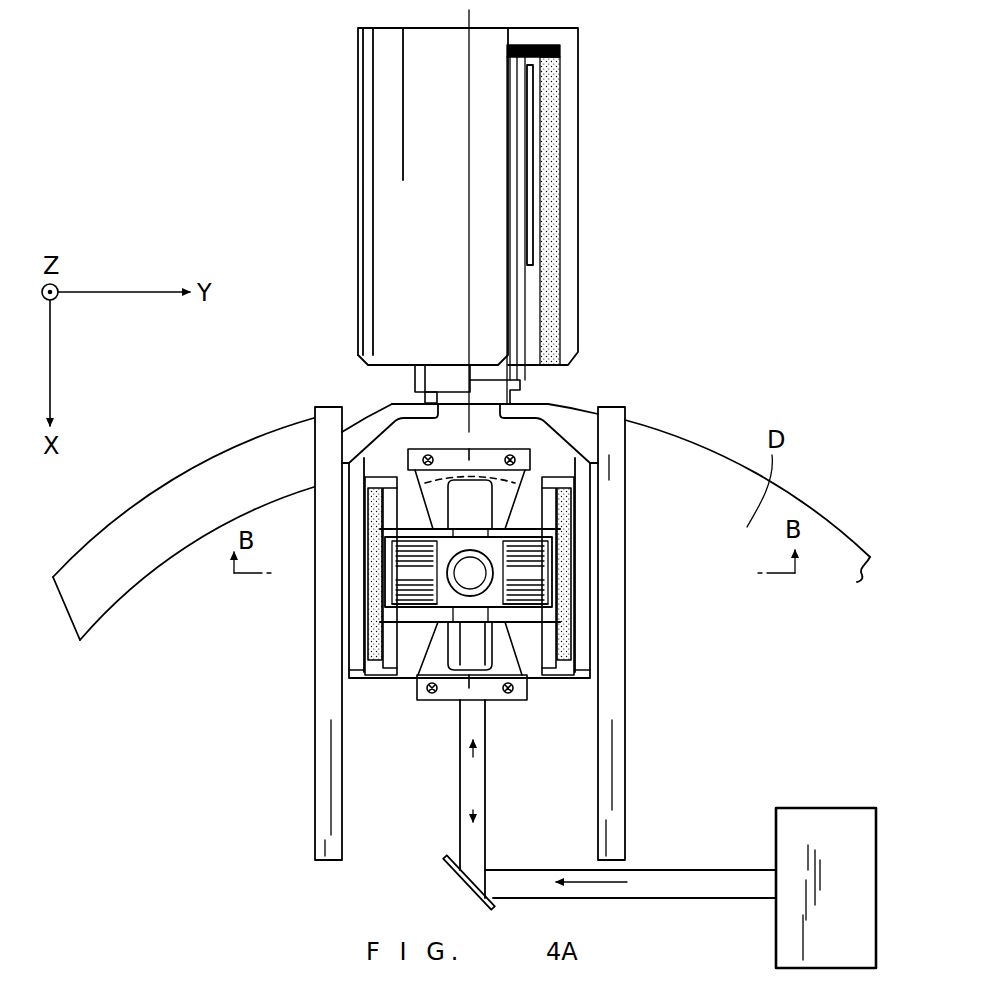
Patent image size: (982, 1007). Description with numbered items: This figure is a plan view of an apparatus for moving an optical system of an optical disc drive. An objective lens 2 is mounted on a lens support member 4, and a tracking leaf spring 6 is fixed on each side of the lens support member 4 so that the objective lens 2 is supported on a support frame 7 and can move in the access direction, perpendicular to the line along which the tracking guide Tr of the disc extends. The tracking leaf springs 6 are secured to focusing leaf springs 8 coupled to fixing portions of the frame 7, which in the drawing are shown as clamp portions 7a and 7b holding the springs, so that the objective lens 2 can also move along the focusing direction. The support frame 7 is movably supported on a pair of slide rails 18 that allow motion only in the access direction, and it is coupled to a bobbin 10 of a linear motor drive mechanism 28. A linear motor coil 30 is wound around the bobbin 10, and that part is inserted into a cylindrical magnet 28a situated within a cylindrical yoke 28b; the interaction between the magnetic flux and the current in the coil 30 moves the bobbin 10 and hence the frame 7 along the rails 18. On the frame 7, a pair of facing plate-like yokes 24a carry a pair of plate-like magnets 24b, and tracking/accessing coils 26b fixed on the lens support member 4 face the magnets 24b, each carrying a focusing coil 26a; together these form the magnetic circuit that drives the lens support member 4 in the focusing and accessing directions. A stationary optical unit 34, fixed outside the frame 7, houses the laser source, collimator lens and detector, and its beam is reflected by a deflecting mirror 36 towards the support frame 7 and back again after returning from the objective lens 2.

The objective lens 2 is at (540, 580).
The lens support member 4 is at (493, 592).
The tracking leaf spring 6 is at (400, 657).
The support frame 7 is at (540, 440).
The upper clamp plate 7a is at (408, 452).
The lower clamp plate 7b is at (520, 700).
The focusing leaf spring 8 is at (437, 497).
The bobbin 10 is at (527, 385).
The slide rails 18 is at (613, 478).
The plate-like yokes 24a is at (583, 682).
The plate-like magnets 24b is at (568, 645).
The focusing coil 26a is at (550, 622).
The tracking/accessing coils 26b is at (543, 567).
The linear motor drive mechanism 28 is at (510, 215).
The cylindrical magnet 28a is at (568, 165).
The cylindrical yoke 28b is at (552, 307).
The linear motor coil 30 is at (533, 245).
The stationary optical unit 34 is at (813, 808).
The deflecting mirror 36 is at (447, 855).
The tracking guide Tr is at (166, 566).